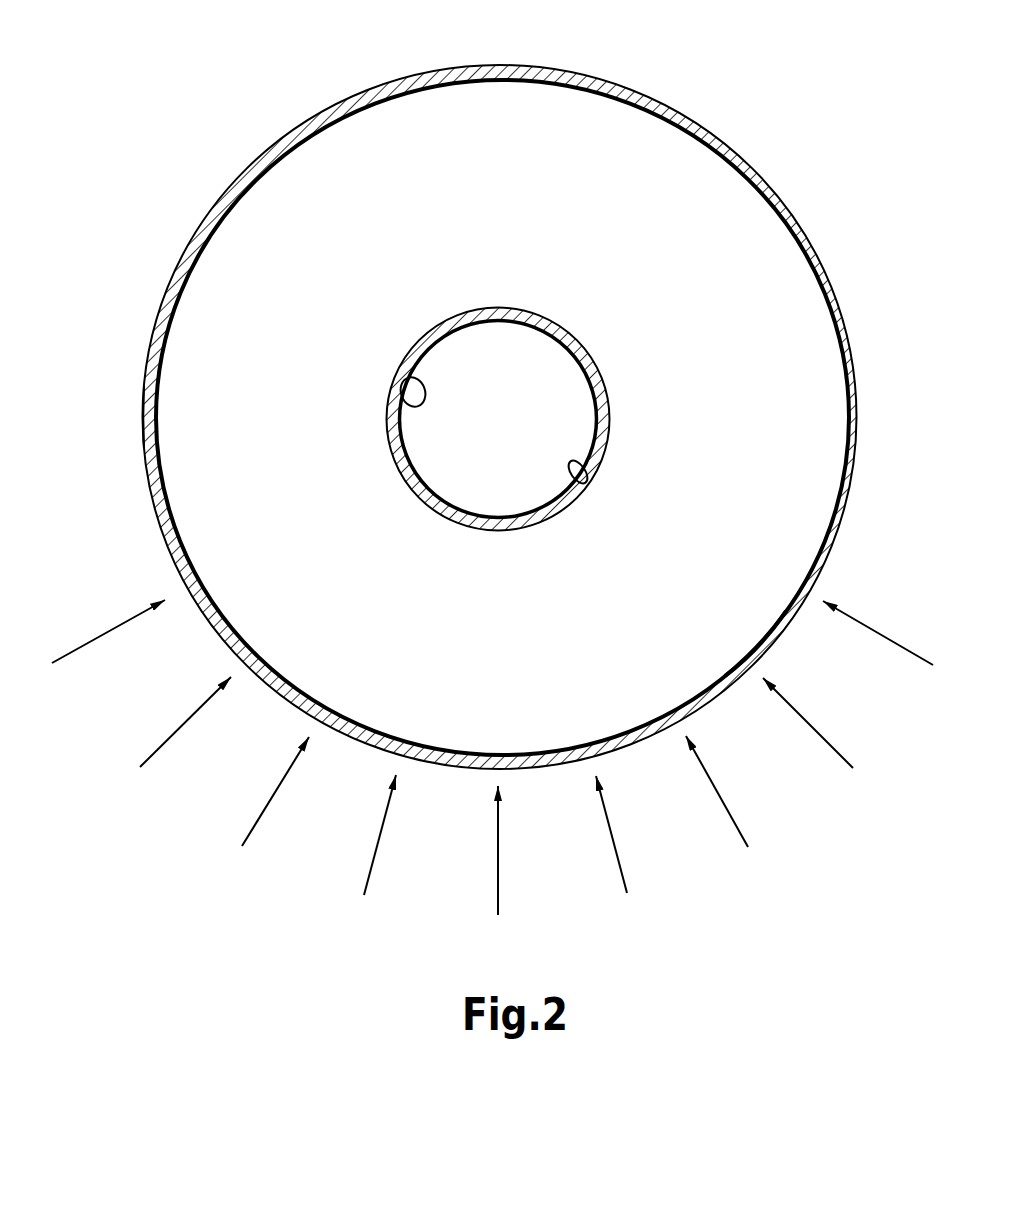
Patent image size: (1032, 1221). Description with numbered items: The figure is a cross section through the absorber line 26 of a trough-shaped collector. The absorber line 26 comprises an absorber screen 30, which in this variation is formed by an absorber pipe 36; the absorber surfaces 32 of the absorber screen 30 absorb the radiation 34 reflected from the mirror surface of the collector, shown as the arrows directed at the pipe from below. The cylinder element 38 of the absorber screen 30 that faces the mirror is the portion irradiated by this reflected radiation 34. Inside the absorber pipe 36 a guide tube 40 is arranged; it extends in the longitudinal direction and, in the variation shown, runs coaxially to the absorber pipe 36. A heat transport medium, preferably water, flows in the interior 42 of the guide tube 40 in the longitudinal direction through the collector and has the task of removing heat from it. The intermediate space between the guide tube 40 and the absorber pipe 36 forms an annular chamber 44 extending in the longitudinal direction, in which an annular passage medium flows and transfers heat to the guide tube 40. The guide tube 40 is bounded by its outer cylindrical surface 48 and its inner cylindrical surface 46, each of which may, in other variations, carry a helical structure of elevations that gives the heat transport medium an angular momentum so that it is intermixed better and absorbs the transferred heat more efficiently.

The absorber line 26 is at (499, 410).
The absorber screen 30 is at (636, 746).
The absorber surfaces 32 is at (852, 482).
The radiation 34 is at (743, 833).
The absorber pipe 36 is at (808, 238).
The cylinder element 38 is at (765, 642).
The guide tube 40 is at (484, 411).
The interior 42 is at (410, 378).
The annular chamber 44 is at (173, 370).
The inner cylindrical surface 46 is at (592, 483).
The outer cylindrical surface 48 is at (543, 523).